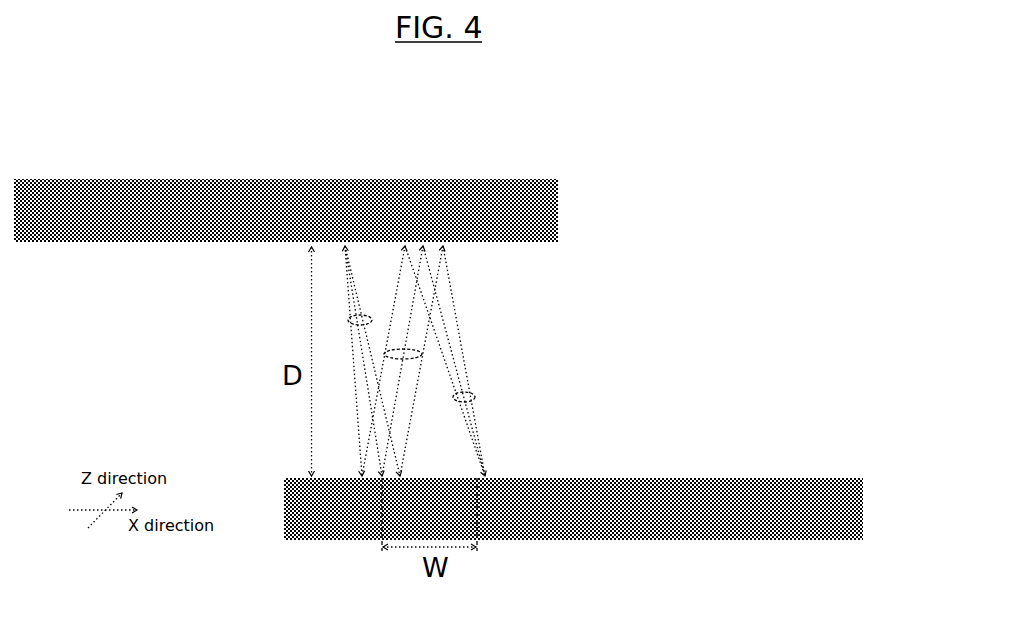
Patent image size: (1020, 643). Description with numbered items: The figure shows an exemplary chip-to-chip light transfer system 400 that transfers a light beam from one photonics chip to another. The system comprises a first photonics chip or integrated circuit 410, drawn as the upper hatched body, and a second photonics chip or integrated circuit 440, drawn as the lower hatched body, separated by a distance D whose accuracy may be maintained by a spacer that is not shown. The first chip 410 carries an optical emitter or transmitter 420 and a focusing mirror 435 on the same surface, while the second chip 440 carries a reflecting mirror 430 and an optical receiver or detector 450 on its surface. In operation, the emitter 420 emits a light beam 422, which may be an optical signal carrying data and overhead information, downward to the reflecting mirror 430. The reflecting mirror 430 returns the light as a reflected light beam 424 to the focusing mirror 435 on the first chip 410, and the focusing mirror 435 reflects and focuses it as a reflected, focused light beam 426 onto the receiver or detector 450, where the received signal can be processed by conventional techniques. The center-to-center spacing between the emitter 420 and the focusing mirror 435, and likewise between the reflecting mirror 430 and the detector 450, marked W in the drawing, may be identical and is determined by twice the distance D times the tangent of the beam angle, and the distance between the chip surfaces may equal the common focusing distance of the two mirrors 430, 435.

The chip-to-chip light transfer system 400 is at (371, 139).
The first photonics chip or integrated circuit 410 is at (233, 180).
The optical emitter or transmitter 420 is at (332, 242).
The light beam 422 is at (350, 320).
The reflected light beam 424 is at (424, 353).
The reflected, focused light beam 426 is at (475, 393).
The reflecting mirror 430 is at (358, 476).
The focusing mirror 435 is at (453, 243).
The second photonics chip or integrated circuit 440 is at (660, 541).
The optical receiver or detector 450 is at (488, 477).